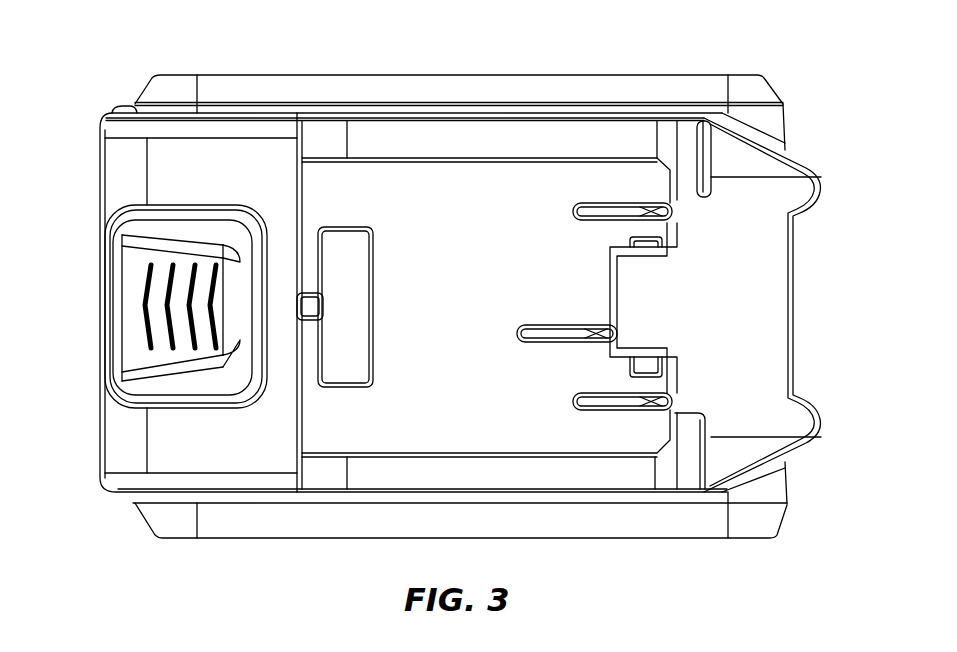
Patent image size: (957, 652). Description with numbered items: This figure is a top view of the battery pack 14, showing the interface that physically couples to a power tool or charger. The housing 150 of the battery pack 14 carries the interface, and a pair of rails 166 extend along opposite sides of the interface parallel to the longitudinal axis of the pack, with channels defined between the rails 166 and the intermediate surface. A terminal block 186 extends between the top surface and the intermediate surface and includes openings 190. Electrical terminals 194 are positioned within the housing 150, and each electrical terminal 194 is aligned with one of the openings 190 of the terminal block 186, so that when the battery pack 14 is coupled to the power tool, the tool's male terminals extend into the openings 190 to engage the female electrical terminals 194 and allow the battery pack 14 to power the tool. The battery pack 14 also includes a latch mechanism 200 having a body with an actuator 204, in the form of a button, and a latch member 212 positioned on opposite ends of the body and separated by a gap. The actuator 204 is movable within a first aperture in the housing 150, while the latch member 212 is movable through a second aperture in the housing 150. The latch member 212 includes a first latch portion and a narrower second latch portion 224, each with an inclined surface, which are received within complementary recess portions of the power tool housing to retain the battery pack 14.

The battery pack 14 is at (806, 501).
The housing 150 is at (581, 75).
The rails 166 is at (463, 157).
The terminal block 186 is at (697, 368).
The openings 190 is at (613, 268).
The electrical terminals 194 is at (633, 207).
The latch mechanism 200 is at (342, 242).
The actuator 204 is at (182, 355).
The latch member 212 is at (343, 360).
The second latch portion 224 is at (310, 310).